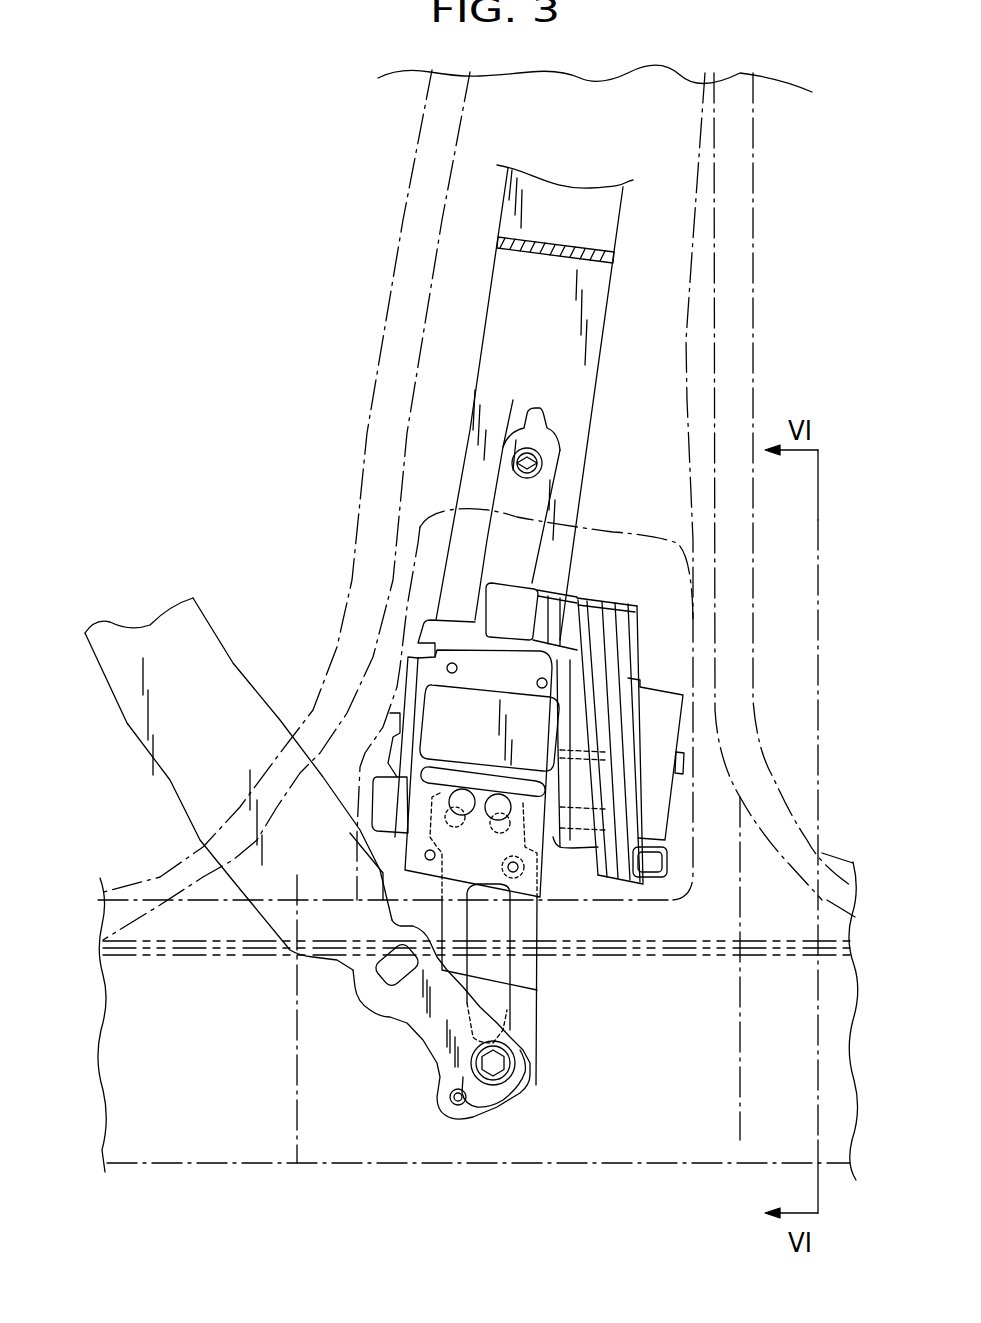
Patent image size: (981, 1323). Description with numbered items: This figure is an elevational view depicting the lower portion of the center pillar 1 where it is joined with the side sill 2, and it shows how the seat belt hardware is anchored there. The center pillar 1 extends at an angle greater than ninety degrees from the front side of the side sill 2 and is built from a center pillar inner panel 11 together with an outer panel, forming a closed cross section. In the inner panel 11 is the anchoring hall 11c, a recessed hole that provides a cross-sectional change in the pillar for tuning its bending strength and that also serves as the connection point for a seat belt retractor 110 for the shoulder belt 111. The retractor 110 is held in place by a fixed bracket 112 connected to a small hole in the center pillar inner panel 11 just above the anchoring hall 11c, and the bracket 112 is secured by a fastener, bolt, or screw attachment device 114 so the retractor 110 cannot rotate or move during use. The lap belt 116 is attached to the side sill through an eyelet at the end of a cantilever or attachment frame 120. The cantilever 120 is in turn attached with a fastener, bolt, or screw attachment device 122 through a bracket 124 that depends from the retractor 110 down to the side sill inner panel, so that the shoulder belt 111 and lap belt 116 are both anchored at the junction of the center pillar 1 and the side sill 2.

The center pillar 1 is at (755, 165).
The side sill 2 is at (123, 1043).
The center pillar inner panel 11 is at (715, 373).
The anchoring hall 11c is at (603, 530).
The seat belt retractor 110 is at (625, 645).
The shoulder belt 111 is at (620, 225).
The fixed bracket 112 is at (505, 547).
The attachment device 114 is at (517, 460).
The lap belt 116 is at (123, 720).
The cantilever 120 is at (418, 1023).
The attachment device 122 is at (493, 1063).
The bracket 124 is at (538, 970).